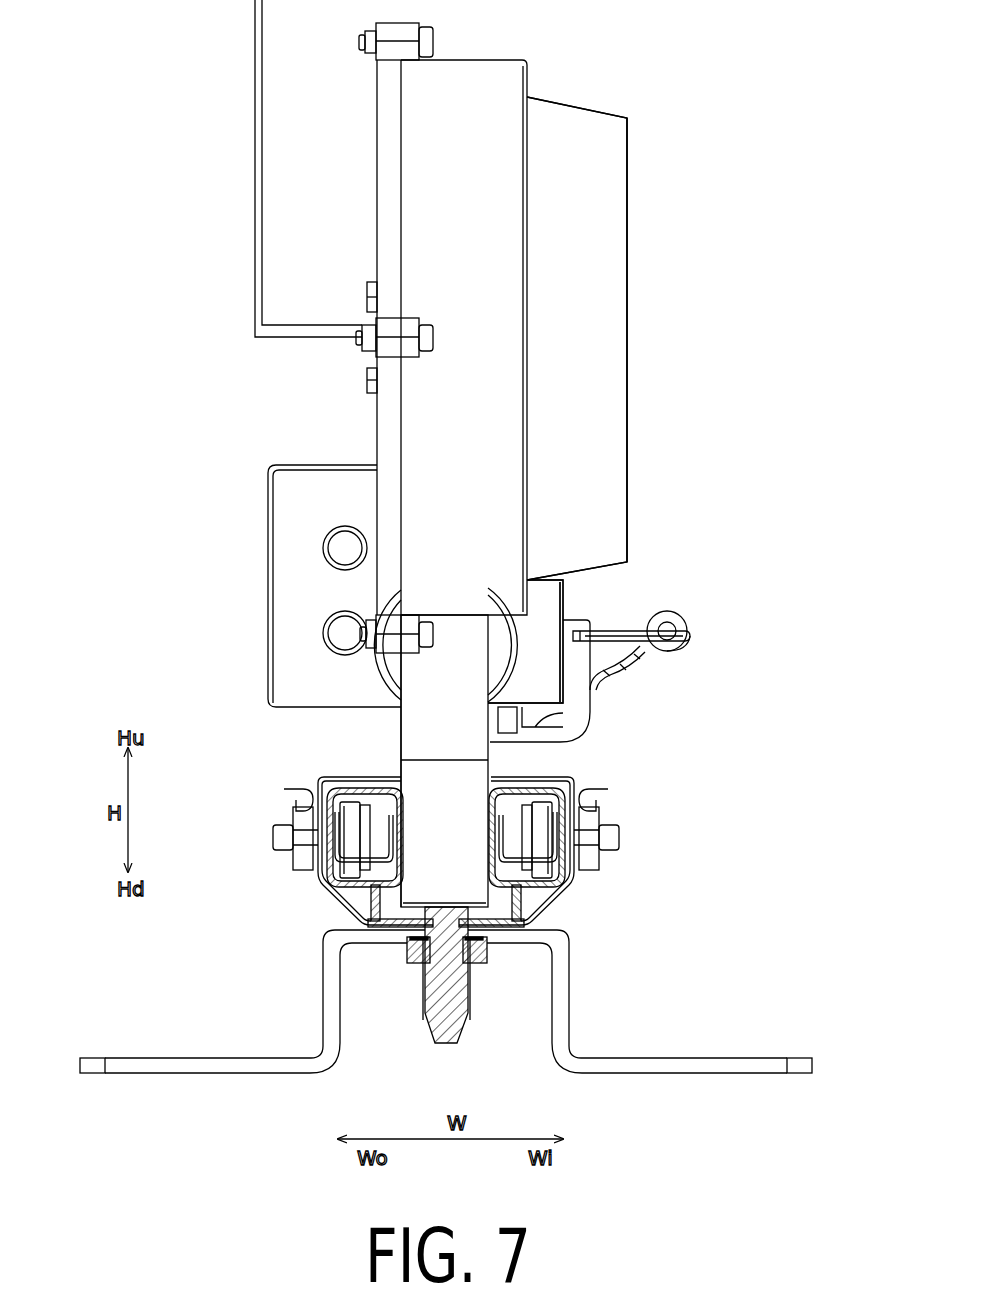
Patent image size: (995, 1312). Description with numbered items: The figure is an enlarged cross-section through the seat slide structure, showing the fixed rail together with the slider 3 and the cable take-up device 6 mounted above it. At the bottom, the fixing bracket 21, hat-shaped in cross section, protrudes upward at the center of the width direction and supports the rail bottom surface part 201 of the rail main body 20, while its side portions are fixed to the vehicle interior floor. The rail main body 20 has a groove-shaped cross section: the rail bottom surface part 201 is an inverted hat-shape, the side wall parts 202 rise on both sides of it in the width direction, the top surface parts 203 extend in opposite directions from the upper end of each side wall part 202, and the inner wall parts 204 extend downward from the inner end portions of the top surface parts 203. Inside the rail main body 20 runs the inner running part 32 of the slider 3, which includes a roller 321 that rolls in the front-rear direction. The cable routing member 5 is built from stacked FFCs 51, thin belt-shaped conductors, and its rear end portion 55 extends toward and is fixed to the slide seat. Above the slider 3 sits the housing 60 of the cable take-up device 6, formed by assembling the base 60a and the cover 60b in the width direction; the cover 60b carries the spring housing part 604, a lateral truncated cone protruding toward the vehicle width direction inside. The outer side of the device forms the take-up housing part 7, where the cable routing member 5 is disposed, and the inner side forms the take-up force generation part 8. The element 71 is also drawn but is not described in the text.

The rear end portion 55 is at (255, 130).
The cable routing member 5 is at (481, 912).
The base 60a is at (376, 172).
The take-up housing part 7 is at (490, 72).
The spring housing part 604 is at (590, 128).
The take-up force generation part 8 is at (577, 338).
The housing 60 is at (655, 118).
The cable take-up device 6 is at (525, 641).
The cover 60b is at (629, 253).
The connector cable 71 is at (452, 650).
The slider 3 is at (268, 500).
The rail main body 20 is at (592, 783).
The top surface part 203 is at (343, 790).
The inner wall part 204 is at (375, 803).
The side wall part 202 is at (295, 829).
The roller 321 is at (350, 820).
The inner running part 32 is at (362, 917).
The FFC 51 is at (407, 927).
The rail bottom surface part 201 is at (490, 928).
The fixing bracket 21 is at (688, 1057).